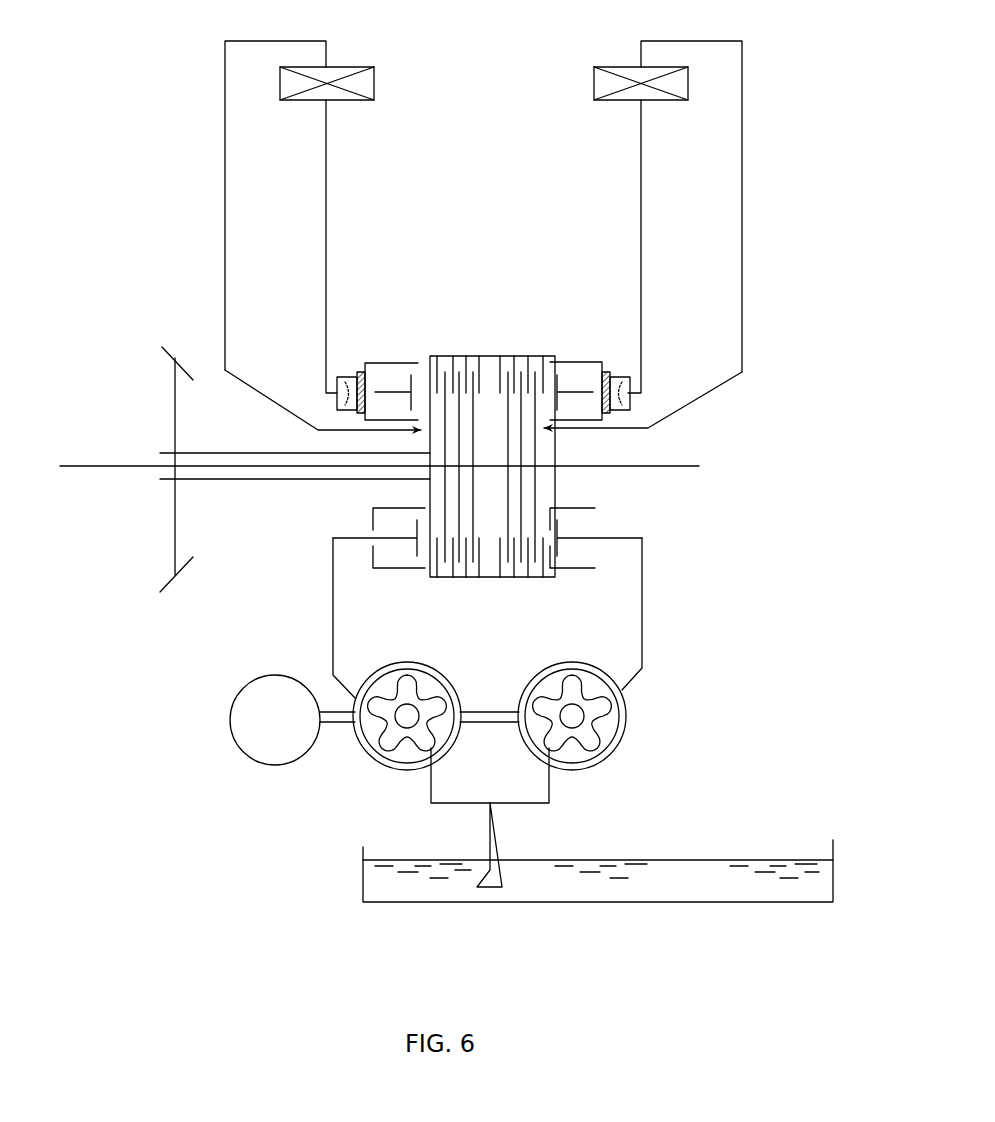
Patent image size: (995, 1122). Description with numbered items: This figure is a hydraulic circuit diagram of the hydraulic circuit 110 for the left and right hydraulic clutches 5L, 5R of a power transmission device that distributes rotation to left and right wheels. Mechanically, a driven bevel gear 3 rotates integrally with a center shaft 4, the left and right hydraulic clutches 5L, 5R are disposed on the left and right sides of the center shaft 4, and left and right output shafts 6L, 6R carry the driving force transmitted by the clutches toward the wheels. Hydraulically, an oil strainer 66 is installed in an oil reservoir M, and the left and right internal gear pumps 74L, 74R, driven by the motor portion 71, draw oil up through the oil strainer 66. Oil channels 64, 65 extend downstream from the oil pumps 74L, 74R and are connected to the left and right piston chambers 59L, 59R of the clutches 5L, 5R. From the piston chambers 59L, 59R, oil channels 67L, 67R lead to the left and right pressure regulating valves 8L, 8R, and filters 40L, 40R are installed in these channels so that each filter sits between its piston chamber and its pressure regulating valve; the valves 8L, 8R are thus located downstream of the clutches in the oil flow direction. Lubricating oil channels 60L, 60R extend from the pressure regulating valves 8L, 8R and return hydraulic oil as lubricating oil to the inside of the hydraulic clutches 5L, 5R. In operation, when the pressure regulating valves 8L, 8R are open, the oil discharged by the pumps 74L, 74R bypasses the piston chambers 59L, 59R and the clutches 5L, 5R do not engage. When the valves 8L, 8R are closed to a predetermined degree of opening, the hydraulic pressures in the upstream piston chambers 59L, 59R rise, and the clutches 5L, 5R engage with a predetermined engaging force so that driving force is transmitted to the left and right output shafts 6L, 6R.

The hydraulic circuit 110 is at (190, 110).
The left pressure regulating valve 8L is at (340, 67).
The right pressure regulating valve 8R is at (620, 67).
The oil channel 67L is at (326, 140).
The oil channel 67R is at (641, 143).
The lubricating oil channel 60L is at (225, 205).
The lubricating oil channel 60R is at (742, 210).
The left hydraulic clutch 5L is at (457, 338).
The right hydraulic clutch 5R is at (518, 338).
The left piston chamber 59L is at (393, 362).
The right piston chamber 59R is at (568, 362).
The filter 40L is at (337, 395).
The filter 40R is at (628, 398).
The driven bevel gear 3 is at (175, 347).
The center shaft 4 is at (238, 453).
The left output shaft 6L is at (150, 466).
The right output shaft 6R is at (650, 466).
The oil channel 64 is at (333, 632).
The oil channel 65 is at (642, 632).
The motor portion 71 is at (292, 738).
The left internal gear pump 74L is at (395, 770).
The right internal gear pump 74R is at (590, 768).
The oil strainer 66 is at (500, 880).
The oil reservoir M is at (363, 877).